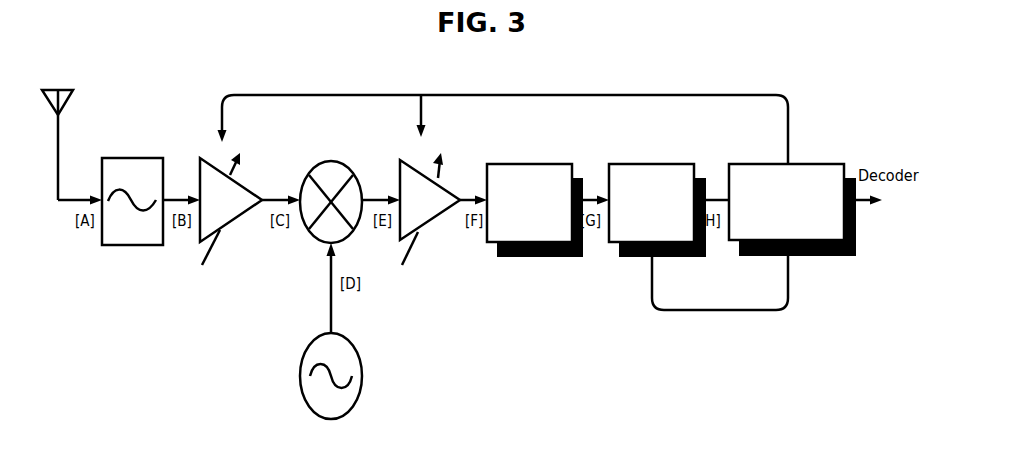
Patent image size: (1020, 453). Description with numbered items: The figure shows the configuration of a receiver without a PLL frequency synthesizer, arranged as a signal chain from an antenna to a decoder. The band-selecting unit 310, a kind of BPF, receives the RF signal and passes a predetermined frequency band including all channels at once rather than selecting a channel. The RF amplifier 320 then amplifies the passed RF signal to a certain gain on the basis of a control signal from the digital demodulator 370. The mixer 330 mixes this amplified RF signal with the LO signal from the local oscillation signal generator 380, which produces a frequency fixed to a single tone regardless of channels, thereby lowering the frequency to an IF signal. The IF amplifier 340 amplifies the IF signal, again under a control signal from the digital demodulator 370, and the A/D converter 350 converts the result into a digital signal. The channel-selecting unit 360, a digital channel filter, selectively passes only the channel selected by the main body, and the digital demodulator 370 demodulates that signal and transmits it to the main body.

The band-selecting unit 310 is at (131, 247).
The RF amplifier 320 is at (225, 228).
The mixer 330 is at (332, 150).
The IF amplifier 340 is at (425, 232).
The A/D converter 350 is at (530, 160).
The channel-selecting unit 360 is at (647, 160).
The digital demodulator 370 is at (752, 160).
The local oscillation (LO) signal generator 380 is at (362, 388).